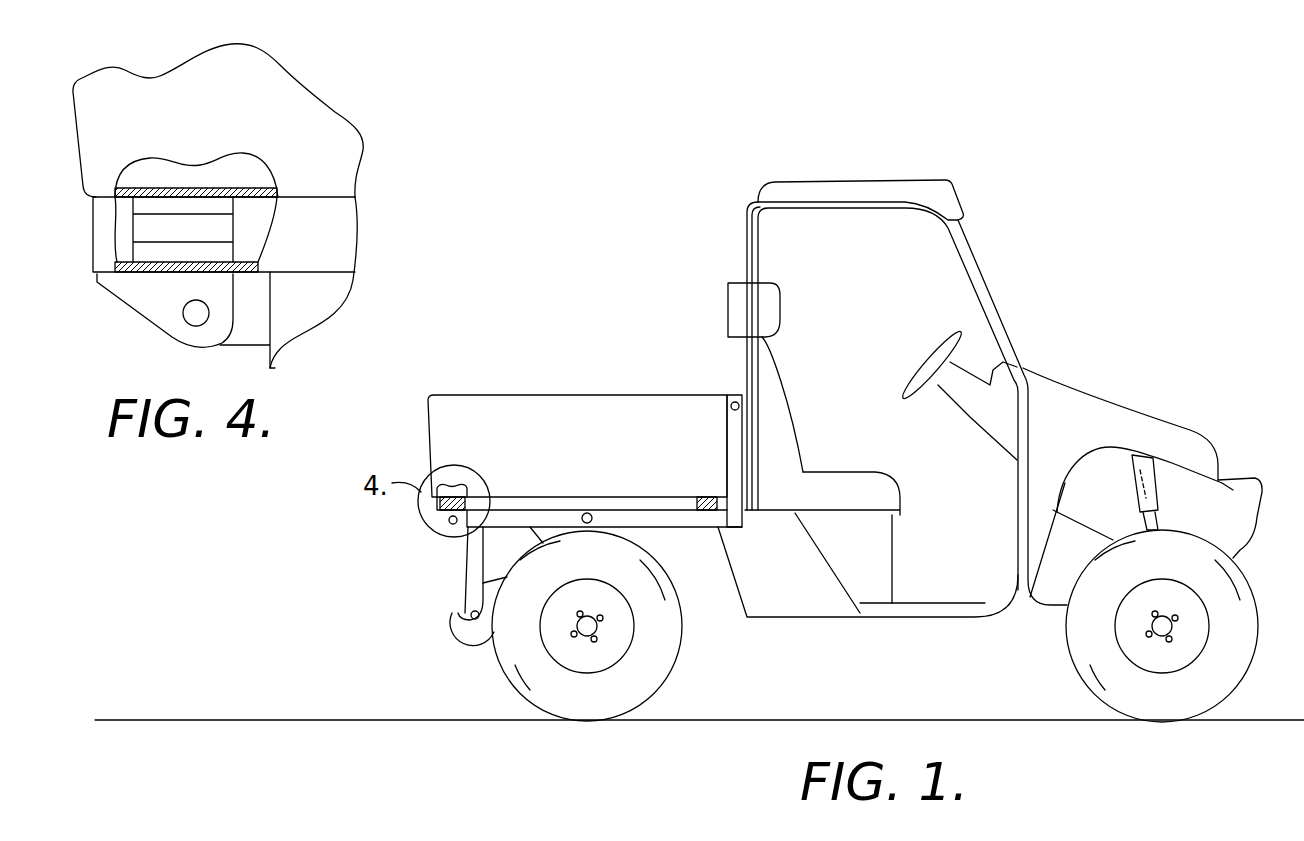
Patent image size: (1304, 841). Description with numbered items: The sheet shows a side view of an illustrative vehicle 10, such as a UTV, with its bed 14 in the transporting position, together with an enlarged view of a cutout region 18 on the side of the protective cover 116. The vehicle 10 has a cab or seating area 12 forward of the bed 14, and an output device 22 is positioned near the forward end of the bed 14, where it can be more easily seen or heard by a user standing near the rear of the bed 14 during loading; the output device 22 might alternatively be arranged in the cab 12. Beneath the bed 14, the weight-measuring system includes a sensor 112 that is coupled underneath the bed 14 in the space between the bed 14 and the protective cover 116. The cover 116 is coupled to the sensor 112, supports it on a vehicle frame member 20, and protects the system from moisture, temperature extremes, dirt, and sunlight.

In FIG. 1, the vehicle 10 is at (568, 256).
In FIG. 1, the cab 12 is at (912, 297).
In FIG. 4, the bed 14 is at (86, 129).
In FIG. 1, the bed 14 is at (432, 416).
In FIG. 1, the cutout region 18 is at (448, 484).
In FIG. 4, the vehicle frame member 20 is at (242, 333).
In FIG. 1, the output device 22 is at (730, 308).
In FIG. 4, the sensor 112 is at (224, 229).
In FIG. 4, the protective cover 116 is at (107, 227).
In FIG. 1, the protective cover 116 is at (523, 503).